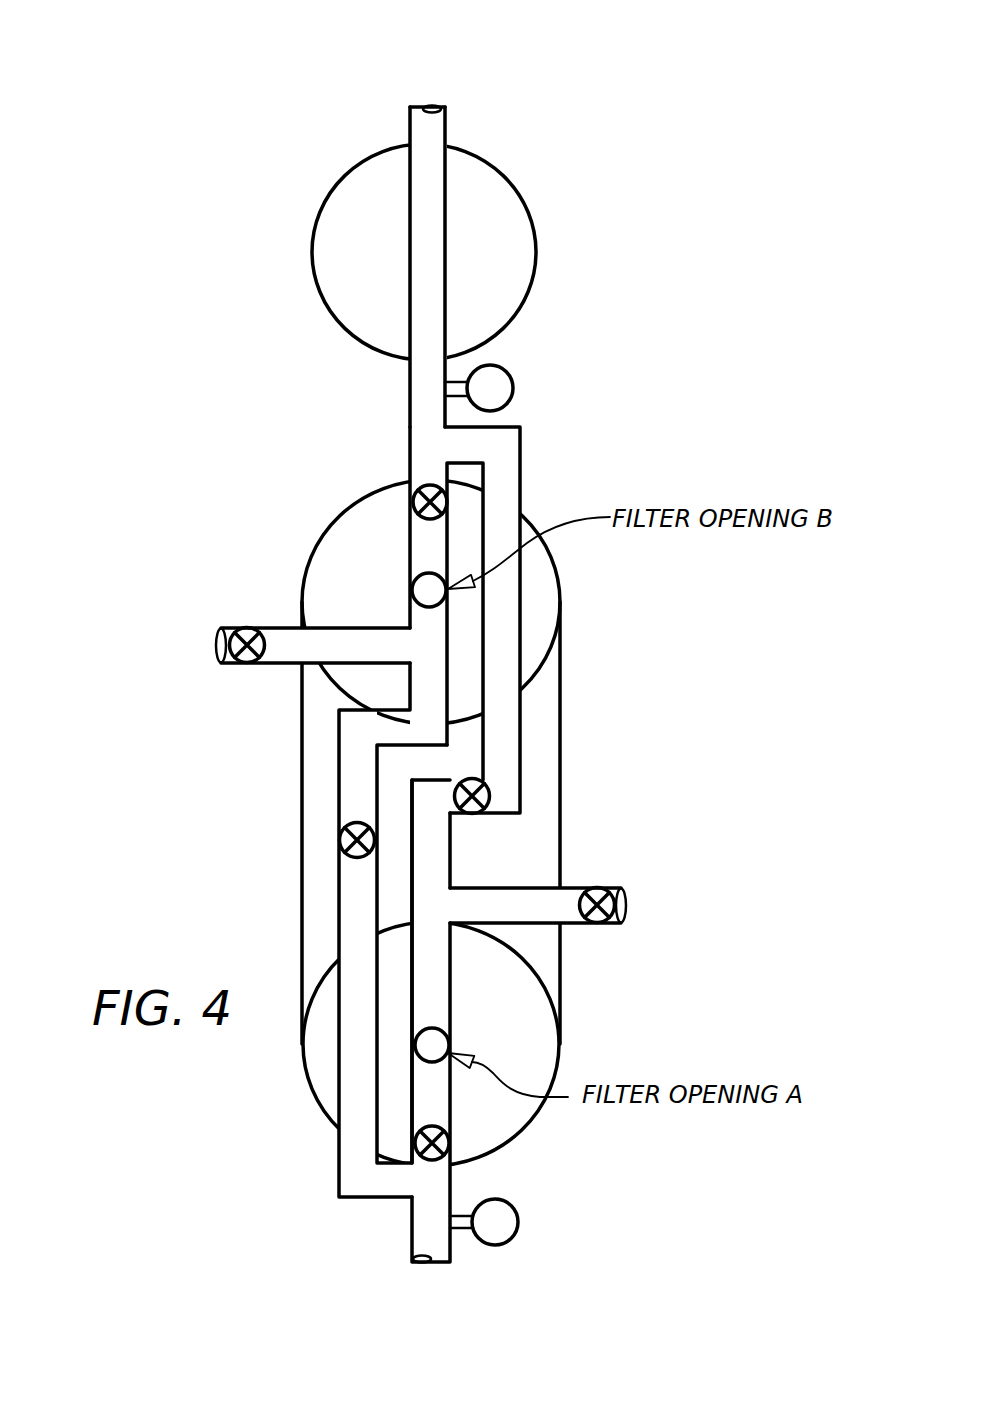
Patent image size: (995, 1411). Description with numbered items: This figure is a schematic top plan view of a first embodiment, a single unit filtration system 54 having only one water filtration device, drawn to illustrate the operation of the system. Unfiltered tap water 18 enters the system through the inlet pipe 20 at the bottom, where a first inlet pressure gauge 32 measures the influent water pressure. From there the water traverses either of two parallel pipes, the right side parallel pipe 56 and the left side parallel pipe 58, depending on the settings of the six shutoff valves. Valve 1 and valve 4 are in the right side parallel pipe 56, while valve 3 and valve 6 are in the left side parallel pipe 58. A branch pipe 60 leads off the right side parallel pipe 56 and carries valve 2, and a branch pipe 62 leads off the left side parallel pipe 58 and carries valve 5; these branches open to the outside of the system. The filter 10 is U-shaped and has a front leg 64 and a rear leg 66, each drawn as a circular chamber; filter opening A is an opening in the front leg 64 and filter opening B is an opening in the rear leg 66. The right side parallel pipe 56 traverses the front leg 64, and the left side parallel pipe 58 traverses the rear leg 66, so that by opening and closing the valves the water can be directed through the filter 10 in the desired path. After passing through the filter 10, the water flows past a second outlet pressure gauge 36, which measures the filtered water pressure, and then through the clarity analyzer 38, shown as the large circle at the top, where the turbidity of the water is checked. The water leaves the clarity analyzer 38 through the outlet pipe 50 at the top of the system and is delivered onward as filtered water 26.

The single unit filtration system 54 is at (305, 126).
The outlet pipe 50 is at (430, 104).
The clarity analyzer 38 is at (300, 195).
The filtered water 26 is at (472, 117).
The second outlet pressure gauge 36 is at (538, 368).
The rear leg 66 is at (377, 591).
The front leg 64 is at (515, 1021).
The filter 10 is at (278, 786).
The right side parallel pipe 56 is at (512, 660).
The pipe leading off pipe 58 62 is at (216, 644).
The left side parallel pipe 58 is at (352, 737).
The pipe leading off pipe 56 60 is at (625, 902).
The inlet pipe 20 is at (424, 1220).
The unfiltered tap water 18 is at (385, 1256).
The first inlet pressure gauge 32 is at (535, 1249).
The valve 6 is at (397, 531).
The valve 5 is at (216, 617).
The valve 4 is at (519, 787).
The valve 3 is at (318, 863).
The valve 2 is at (627, 936).
The valve 1 is at (475, 1165).